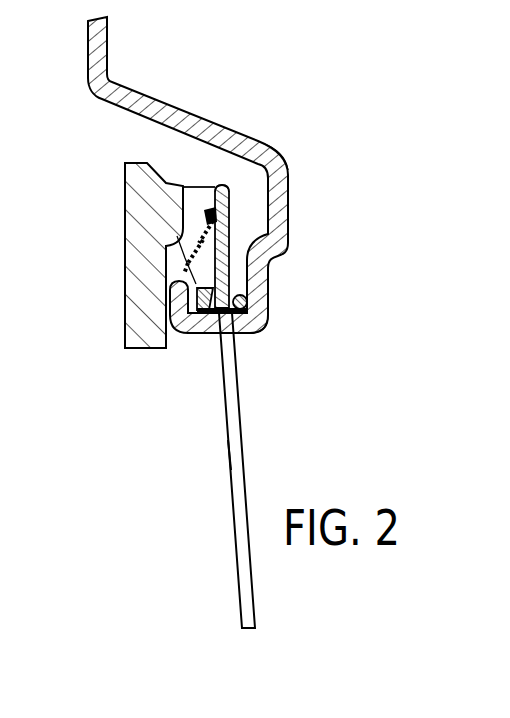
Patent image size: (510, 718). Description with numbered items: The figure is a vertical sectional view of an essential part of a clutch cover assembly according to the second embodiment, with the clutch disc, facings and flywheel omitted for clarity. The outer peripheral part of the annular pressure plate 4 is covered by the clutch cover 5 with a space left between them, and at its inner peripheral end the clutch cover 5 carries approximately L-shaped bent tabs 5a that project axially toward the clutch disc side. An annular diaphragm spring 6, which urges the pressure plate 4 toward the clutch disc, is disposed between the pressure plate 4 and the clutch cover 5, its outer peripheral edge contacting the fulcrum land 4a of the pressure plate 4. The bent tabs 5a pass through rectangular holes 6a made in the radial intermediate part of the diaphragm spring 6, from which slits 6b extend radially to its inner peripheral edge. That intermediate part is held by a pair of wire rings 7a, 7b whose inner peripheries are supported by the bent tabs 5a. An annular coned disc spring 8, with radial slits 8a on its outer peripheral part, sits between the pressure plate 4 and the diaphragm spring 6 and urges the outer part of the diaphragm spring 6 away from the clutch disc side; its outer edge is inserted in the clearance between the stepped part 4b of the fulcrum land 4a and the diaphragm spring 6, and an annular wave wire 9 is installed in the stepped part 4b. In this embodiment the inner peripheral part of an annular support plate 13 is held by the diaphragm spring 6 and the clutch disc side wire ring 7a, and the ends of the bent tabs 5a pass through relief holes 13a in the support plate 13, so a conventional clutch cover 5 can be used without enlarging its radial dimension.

The pressure plate 4 is at (124, 200).
The fulcrum land 4a is at (187, 188).
The stepped part 4b is at (194, 188).
The clutch cover 5 is at (268, 143).
The bent tabs 5a is at (250, 330).
The diaphragm spring 6 is at (241, 436).
The rectangular holes 6a is at (216, 338).
The slits 6b is at (230, 455).
The wire ring 7a is at (184, 322).
The wire ring 7b is at (250, 302).
The coned disc spring 8 is at (230, 245).
The slits 8a is at (230, 208).
The wave wire 9 is at (285, 153).
The support plate 13 is at (213, 256).
The relief holes 13a is at (173, 304).